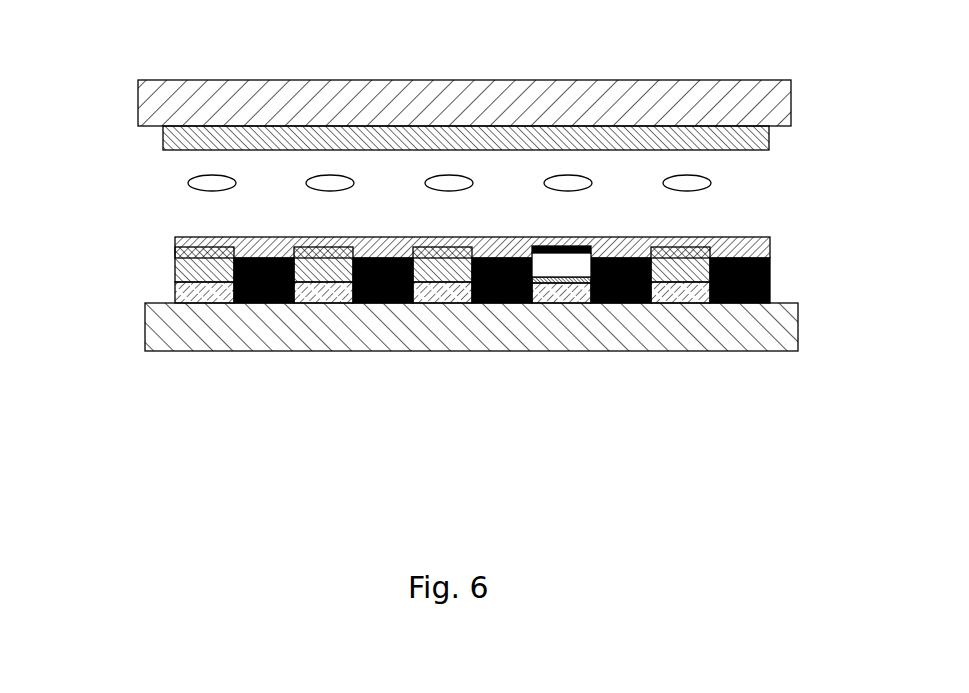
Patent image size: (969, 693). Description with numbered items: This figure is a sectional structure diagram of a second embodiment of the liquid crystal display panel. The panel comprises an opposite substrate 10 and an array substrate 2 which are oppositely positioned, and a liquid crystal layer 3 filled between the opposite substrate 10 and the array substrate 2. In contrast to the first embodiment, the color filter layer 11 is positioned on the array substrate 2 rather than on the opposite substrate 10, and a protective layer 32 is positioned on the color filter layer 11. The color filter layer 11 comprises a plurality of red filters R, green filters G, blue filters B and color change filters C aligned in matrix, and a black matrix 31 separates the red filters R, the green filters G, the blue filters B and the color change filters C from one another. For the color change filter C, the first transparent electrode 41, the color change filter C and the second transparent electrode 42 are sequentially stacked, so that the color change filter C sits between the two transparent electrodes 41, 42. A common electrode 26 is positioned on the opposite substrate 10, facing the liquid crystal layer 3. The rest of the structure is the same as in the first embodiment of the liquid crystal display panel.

The opposite substrate 10 is at (722, 95).
The common electrode 26 is at (695, 138).
The liquid crystal layer 3 is at (214, 183).
The array substrate 2 is at (702, 320).
The protective layer 32 is at (770, 247).
The black matrix 31 is at (770, 282).
The color filter layer 11 is at (442, 343).
The red filter R is at (215, 260).
The green filter G is at (330, 263).
The blue filter B is at (445, 255).
The color change filter C is at (567, 329).
The first transparent electrode 41 is at (575, 253).
The second transparent electrode 42 is at (579, 254).